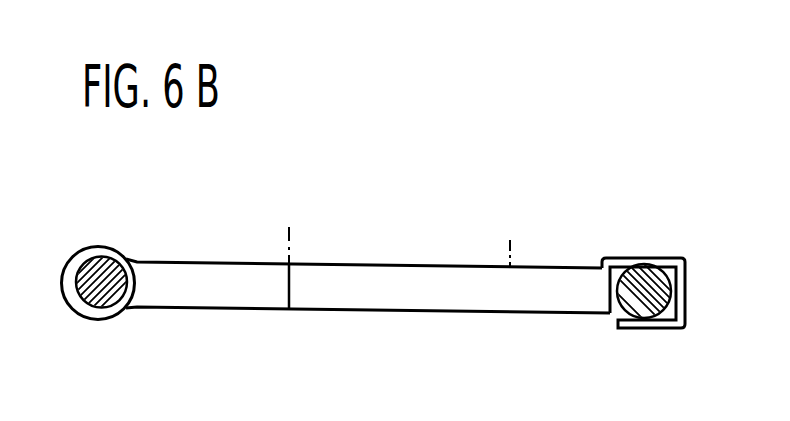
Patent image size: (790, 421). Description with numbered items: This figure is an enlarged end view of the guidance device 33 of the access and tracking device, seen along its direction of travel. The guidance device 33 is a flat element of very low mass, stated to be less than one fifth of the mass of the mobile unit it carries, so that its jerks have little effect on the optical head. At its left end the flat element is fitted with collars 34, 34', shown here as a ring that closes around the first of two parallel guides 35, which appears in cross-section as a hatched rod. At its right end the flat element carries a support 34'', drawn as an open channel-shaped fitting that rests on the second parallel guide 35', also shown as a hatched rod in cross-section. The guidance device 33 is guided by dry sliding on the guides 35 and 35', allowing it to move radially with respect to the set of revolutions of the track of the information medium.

The guidance device 33 is at (389, 243).
The collar 34 is at (131, 251).
The collar 34' is at (98, 283).
The support 34'' is at (646, 264).
The guide 35 is at (114, 319).
The guide 35' is at (640, 320).